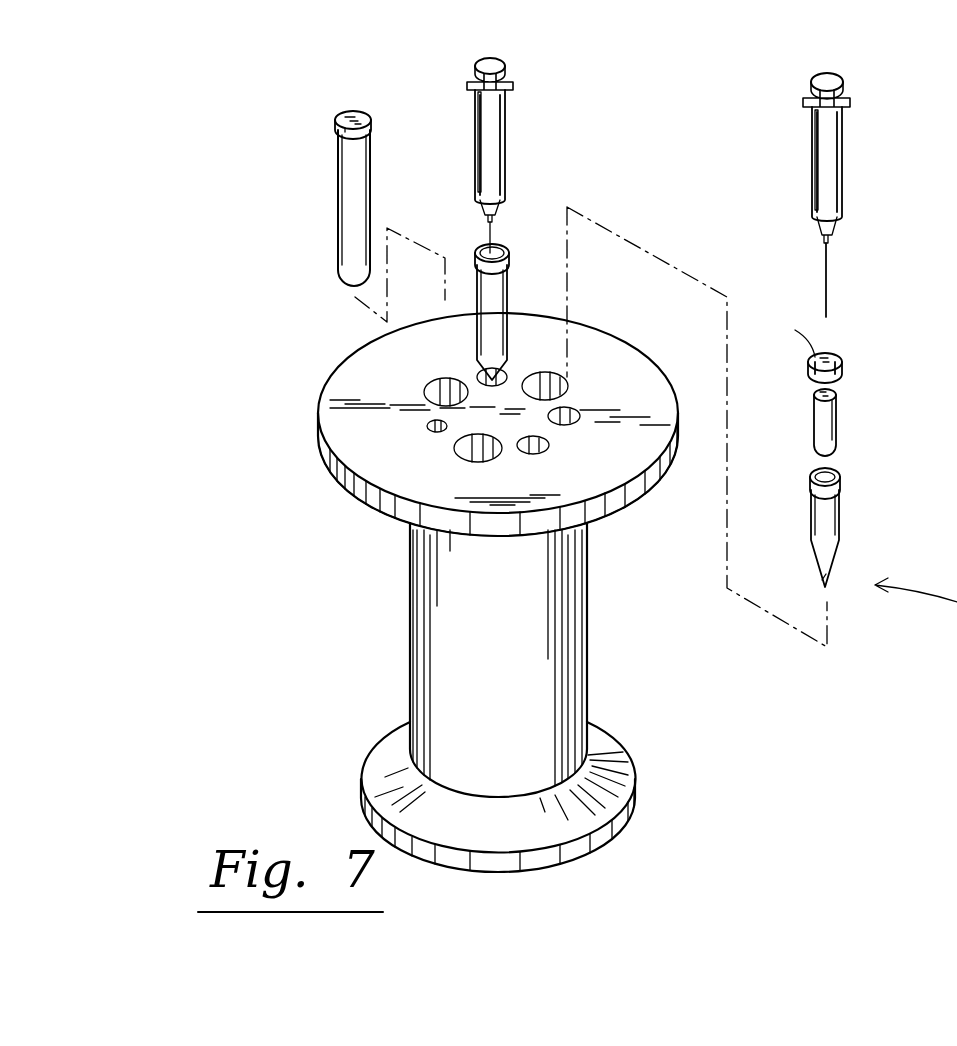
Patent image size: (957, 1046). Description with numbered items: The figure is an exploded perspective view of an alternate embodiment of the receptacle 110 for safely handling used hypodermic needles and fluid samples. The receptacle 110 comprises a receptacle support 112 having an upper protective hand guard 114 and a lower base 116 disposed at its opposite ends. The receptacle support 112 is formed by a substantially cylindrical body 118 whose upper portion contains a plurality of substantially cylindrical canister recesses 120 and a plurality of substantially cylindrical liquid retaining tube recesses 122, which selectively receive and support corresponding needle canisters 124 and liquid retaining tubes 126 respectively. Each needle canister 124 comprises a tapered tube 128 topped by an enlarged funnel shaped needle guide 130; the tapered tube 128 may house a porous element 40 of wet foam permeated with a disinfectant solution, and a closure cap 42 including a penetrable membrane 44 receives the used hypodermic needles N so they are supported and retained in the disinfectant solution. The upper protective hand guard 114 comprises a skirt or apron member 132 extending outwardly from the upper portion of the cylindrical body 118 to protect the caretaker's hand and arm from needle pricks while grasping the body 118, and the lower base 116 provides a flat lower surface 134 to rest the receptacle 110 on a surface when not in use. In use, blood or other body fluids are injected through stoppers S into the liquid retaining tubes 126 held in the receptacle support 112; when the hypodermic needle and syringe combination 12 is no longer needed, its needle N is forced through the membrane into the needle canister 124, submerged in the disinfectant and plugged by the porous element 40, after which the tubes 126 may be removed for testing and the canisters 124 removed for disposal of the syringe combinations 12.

The hypodermic needle and syringe combination 12 is at (790, 182).
The porous element 40 is at (812, 412).
The closure cap 42 is at (863, 348).
The penetrable membrane 44 is at (815, 357).
The receptacle 110 is at (289, 641).
The receptacle support 112 is at (379, 687).
The upper protective hand guard 114 is at (262, 388).
The lower base 116 is at (653, 739).
The substantially cylindrical body 118 is at (577, 592).
The canister recesses 120 is at (418, 435).
The liquid retaining tube recesses 122 is at (457, 470).
The needle canister 124 is at (537, 266).
The liquid retaining tubes 126 is at (350, 207).
The tapered tube 128 is at (822, 565).
The funnel shaped needle guide 130 is at (840, 477).
The skirt or apron member 132 is at (602, 490).
The flat lower surface 134 is at (632, 778).
The stoppers S is at (375, 115).
The hypodermic needle N is at (830, 272).